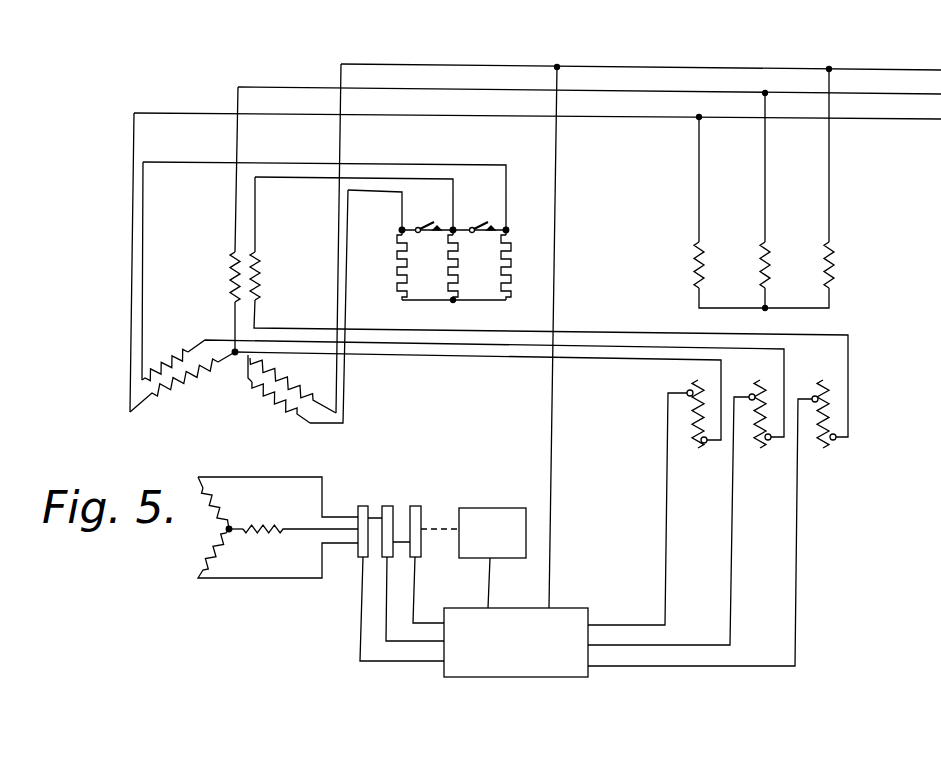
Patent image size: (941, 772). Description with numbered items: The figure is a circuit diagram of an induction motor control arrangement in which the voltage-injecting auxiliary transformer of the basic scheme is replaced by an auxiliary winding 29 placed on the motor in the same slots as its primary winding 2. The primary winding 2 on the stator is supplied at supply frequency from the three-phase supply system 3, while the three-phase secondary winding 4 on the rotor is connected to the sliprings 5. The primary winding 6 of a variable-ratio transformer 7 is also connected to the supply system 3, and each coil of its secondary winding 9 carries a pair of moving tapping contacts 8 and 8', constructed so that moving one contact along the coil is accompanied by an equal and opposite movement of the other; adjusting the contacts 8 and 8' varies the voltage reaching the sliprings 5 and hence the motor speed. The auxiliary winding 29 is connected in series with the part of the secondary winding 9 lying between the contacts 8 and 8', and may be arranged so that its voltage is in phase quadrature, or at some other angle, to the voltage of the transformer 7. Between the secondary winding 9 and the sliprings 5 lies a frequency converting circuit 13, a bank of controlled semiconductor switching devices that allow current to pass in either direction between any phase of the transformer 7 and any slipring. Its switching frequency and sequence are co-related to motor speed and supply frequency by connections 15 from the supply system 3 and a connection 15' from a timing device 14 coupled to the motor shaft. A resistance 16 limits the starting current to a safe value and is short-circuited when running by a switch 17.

The primary winding 2 is at (223, 219).
The three-phase supply system 3 is at (537, 108).
The secondary winding 4 is at (271, 527).
The sliprings 5 is at (401, 567).
The primary winding 6 is at (776, 178).
The variable-ratio transformer 7 is at (779, 306).
The moving tapping contact 8 is at (698, 503).
The moving tapping contact 8' is at (732, 523).
The secondary winding 9 is at (647, 502).
The frequency converting circuit 13 is at (516, 642).
The timing device 14 is at (473, 533).
The connections 15 is at (566, 337).
The connection 15' is at (507, 583).
The resistance 16 is at (470, 266).
The switch 17 is at (454, 214).
The auxiliary winding 29 is at (190, 350).